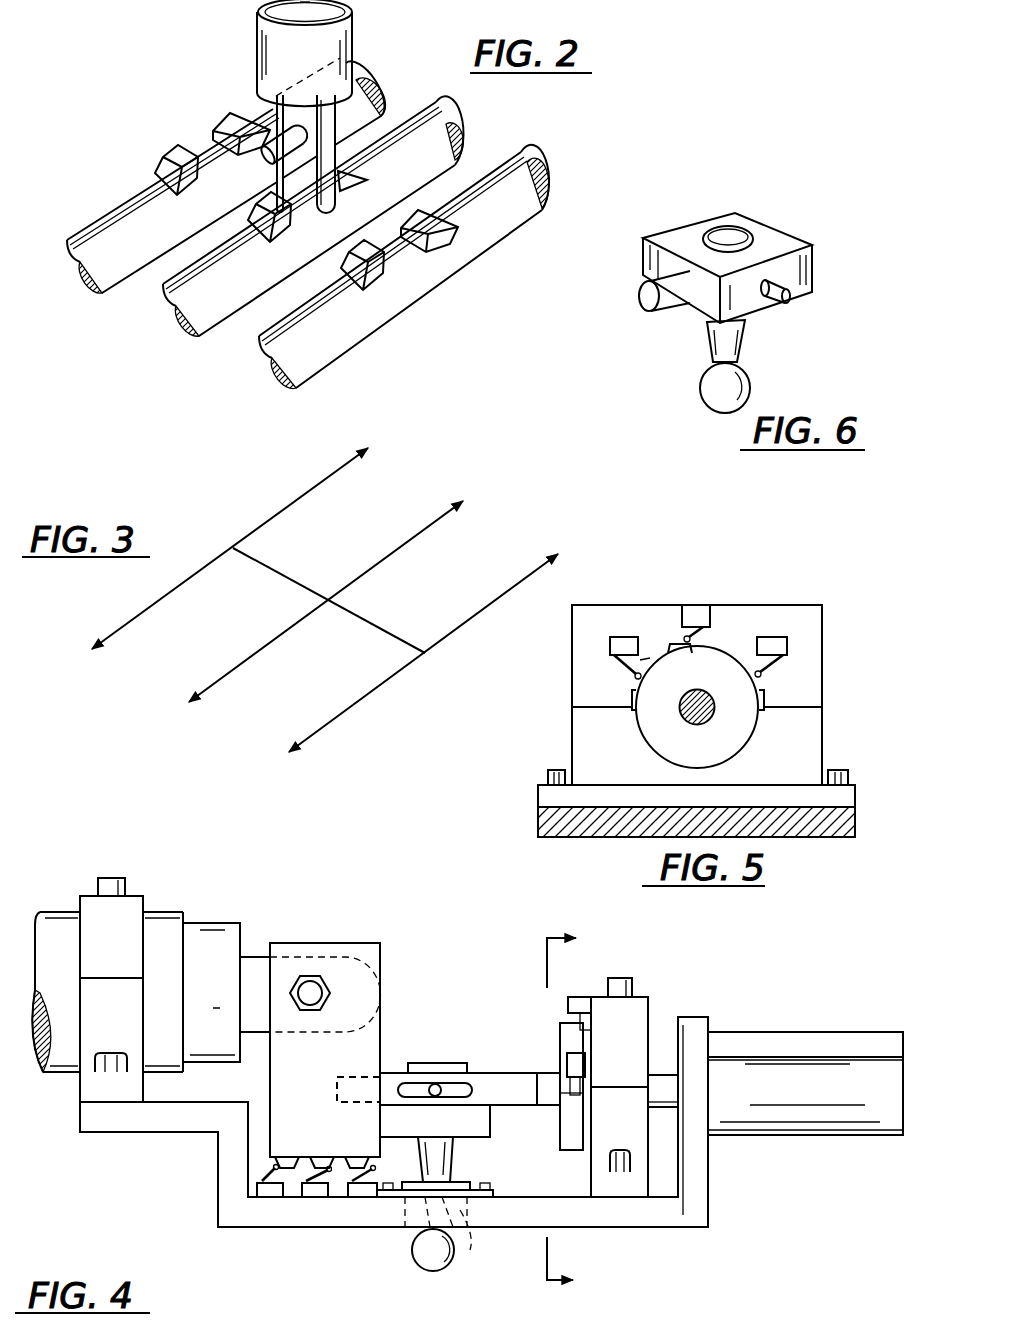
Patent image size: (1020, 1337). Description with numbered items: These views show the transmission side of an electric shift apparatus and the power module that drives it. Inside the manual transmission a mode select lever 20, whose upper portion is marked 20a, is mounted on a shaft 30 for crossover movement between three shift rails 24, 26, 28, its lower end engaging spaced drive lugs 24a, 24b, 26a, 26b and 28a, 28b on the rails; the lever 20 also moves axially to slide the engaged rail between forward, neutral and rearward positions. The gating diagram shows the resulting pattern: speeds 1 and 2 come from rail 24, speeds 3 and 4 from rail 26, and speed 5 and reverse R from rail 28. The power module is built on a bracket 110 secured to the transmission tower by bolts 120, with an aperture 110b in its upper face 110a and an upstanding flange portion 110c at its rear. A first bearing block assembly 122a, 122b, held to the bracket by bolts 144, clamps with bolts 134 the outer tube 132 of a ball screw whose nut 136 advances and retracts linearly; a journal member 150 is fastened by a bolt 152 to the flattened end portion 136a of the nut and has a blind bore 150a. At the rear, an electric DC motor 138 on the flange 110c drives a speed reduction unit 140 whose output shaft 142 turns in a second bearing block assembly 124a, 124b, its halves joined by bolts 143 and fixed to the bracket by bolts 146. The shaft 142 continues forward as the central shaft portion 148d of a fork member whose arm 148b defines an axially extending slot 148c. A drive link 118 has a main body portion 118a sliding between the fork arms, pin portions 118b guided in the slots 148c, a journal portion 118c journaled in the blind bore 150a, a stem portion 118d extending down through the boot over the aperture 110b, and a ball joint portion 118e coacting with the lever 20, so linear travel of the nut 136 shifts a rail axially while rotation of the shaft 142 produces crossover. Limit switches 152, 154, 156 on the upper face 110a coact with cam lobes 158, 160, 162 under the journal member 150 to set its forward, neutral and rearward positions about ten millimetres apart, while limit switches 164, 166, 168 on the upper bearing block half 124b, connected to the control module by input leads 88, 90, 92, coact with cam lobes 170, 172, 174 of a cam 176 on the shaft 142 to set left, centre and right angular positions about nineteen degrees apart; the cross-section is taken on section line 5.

In FIG. 2, the mode select lever 20 is at (242, 47).
In FIG. 2, the housing opening 20a is at (354, 36).
In FIG. 2, the shift rail 24 is at (118, 218).
In FIG. 2, the drive lug 24a is at (162, 150).
In FIG. 2, the drive lug 24b is at (226, 115).
In FIG. 2, the shift rail 26 is at (165, 303).
In FIG. 2, the drive lug 26a is at (264, 220).
In FIG. 2, the drive lug 26b is at (356, 176).
In FIG. 2, the shift rail 28 is at (266, 358).
In FIG. 2, the drive lug 28a is at (352, 256).
In FIG. 2, the drive lug 28b is at (420, 216).
In FIG. 2, the shaft 30 is at (264, 157).
In FIG. 5, the input lead 88 is at (610, 645).
In FIG. 5, the input lead 90 is at (697, 605).
In FIG. 5, the input lead 92 is at (787, 645).
In FIG. 5, the bracket 110 is at (855, 830).
In FIG. 4, the bracket 110 is at (443, 1117).
In FIG. 4, the upper face 110a is at (560, 1197).
In FIG. 4, the aperture 110b is at (465, 1236).
In FIG. 4, the upstanding flange portion 110c is at (708, 1017).
In FIG. 6, the drive link 118 is at (719, 266).
In FIG. 6, the main body portion 118a is at (712, 222).
In FIG. 4, the main body portion 118a is at (452, 1132).
In FIG. 6, the pin portion 118b is at (790, 292).
In FIG. 4, the pin portion 118b is at (435, 1084).
In FIG. 6, the journal portion 118c is at (645, 300).
In FIG. 6, the stem portion 118d is at (745, 340).
In FIG. 4, the stem portion 118d is at (452, 1162).
In FIG. 6, the ball joint portion 118e is at (745, 392).
In FIG. 4, the ball joint portion 118e is at (416, 1258).
In FIG. 4, the bolt 120 is at (490, 1190).
In FIG. 4, the bearing block half 122a is at (111, 999).
In FIG. 4, the bearing block half 122b is at (132, 951).
In FIG. 5, the bearing block half 124a is at (687, 695).
In FIG. 4, the bearing block half 124a is at (619, 1097).
In FIG. 5, the upper bearing block half 124b is at (572, 672).
In FIG. 4, the upper bearing block half 124b is at (642, 1027).
In FIG. 4, the outer tube 132 is at (63, 912).
In FIG. 4, the bolt 134 is at (112, 878).
In FIG. 4, the inner tube or nut 136 is at (212, 923).
In FIG. 4, the flattened end portion 136a is at (256, 957).
In FIG. 4, the electric DC motor 138 is at (862, 1032).
In FIG. 4, the speed reduction unit 140 is at (840, 1135).
In FIG. 5, the output shaft 142 is at (712, 716).
In FIG. 4, the output shaft 142 is at (660, 1075).
In FIG. 4, the bolt 143 is at (620, 978).
In FIG. 4, the bolt 144 is at (100, 1064).
In FIG. 5, the bolt 146 is at (552, 772).
In FIG. 4, the bolt 146 is at (630, 1160).
In FIG. 4, the right fork arm 148b is at (470, 1073).
In FIG. 4, the axially extending slot 148c is at (472, 1088).
In FIG. 4, the central shaft portion 148d is at (552, 1073).
In FIG. 4, the journal member 150 is at (377, 943).
In FIG. 4, the blind bore 150a is at (338, 1086).
In FIG. 4, the limit switch 152 is at (312, 988).
In FIG. 4, the limit switch 154 is at (317, 1197).
In FIG. 4, the limit switch 156 is at (366, 1197).
In FIG. 4, the cam lobe 158 is at (288, 1157).
In FIG. 4, the cam lobe 160 is at (326, 1157).
In FIG. 4, the cam lobe 162 is at (360, 1157).
In FIG. 5, the limit switch 164 is at (621, 637).
In FIG. 5, the limit switch 166 is at (706, 624).
In FIG. 4, the limit switch 166 is at (585, 1000).
In FIG. 5, the limit switch 168 is at (770, 637).
In FIG. 4, the limit switch 168 is at (584, 1067).
In FIG. 5, the cam lobe 170 is at (705, 696).
In FIG. 5, the cam lobe 172 is at (678, 647).
In FIG. 5, the cam lobe 174 is at (766, 700).
In FIG. 5, the cam 176 is at (660, 732).
In FIG. 4, the cam 176 is at (572, 1150).
In FIG. 3, the view direction 1 is at (230, 546).
In FIG. 3, the view direction 2 is at (240, 537).
In FIG. 3, the view direction 3 is at (326, 602).
In FIG. 3, the view direction 4 is at (334, 592).
In FIG. 3, the section line 5 is at (428, 659).
In FIG. 4, the section line 5 is at (574, 1112).
In FIG. 3, the view direction R is at (436, 646).